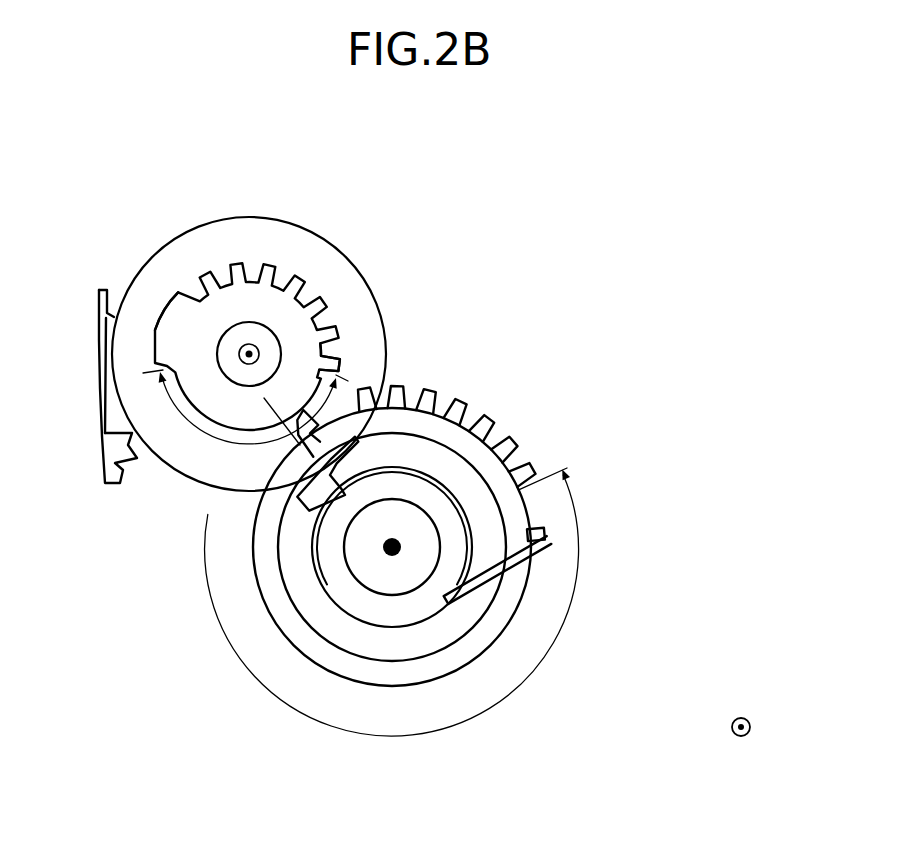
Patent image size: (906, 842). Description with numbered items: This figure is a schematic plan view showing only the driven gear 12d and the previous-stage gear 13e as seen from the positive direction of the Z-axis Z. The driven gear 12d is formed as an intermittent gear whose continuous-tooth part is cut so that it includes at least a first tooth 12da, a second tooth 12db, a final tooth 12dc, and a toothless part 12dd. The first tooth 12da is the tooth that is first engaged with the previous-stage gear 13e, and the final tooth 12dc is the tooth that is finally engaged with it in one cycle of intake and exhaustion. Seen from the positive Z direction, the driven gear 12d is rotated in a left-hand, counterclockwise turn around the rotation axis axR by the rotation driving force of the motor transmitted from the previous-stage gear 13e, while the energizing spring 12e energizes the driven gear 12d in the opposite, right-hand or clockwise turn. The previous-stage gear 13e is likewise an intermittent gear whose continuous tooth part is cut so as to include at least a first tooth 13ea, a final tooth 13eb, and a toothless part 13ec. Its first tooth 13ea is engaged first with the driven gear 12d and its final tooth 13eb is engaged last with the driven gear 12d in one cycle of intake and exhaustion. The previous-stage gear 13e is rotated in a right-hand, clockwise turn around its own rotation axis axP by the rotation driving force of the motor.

The previous-stage gear 13e is at (200, 272).
The first tooth 13ea is at (325, 364).
The final tooth 13eb is at (173, 329).
The toothless part 13ec is at (160, 393).
The rotation axis axP is at (249, 354).
The driven gear 12d is at (510, 392).
The first tooth 12da is at (266, 406).
The second tooth 12db is at (368, 396).
The final tooth 12dc is at (523, 476).
The toothless part 12dd is at (370, 733).
The energizing spring 12e is at (545, 547).
The rotation axis axR is at (392, 547).
The Z-axis Z is at (749, 730).